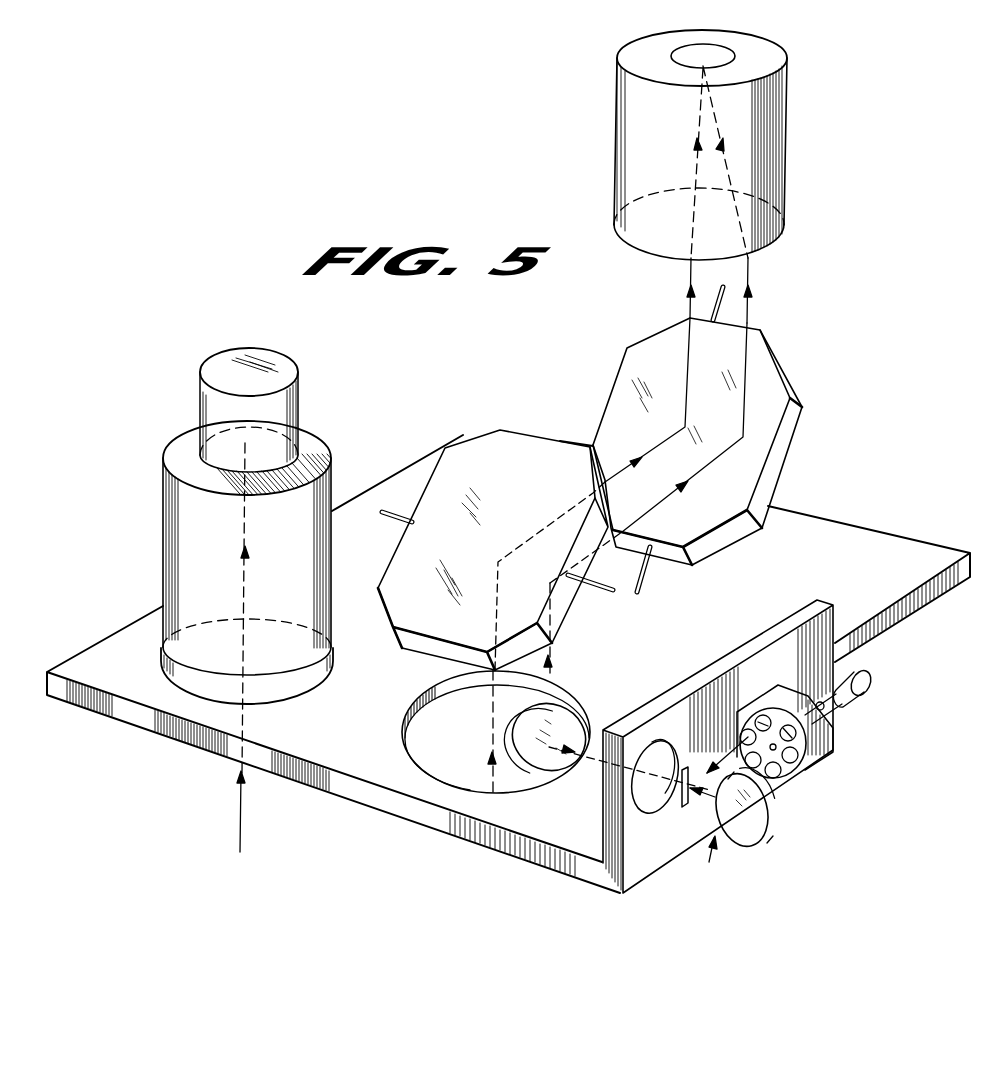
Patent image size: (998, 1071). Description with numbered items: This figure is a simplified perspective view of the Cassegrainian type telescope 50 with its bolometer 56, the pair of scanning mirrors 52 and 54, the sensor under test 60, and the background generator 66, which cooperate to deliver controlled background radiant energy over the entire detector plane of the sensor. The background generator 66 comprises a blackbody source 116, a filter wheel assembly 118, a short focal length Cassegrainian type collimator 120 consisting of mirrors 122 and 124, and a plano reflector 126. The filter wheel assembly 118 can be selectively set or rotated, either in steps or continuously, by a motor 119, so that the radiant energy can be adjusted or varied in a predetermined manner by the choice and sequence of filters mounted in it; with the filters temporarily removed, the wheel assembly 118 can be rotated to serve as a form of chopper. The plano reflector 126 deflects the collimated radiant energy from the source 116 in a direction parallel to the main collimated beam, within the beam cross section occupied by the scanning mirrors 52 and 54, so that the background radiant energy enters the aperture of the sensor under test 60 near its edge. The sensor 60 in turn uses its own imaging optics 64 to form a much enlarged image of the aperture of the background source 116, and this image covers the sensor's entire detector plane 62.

The Cassegrainian type telescope 50 is at (163, 517).
The scanning mirror 52 is at (492, 430).
The scanning mirror 54 is at (612, 401).
The bolometer 56 is at (199, 393).
The sensor under test 60 is at (720, 150).
The detector plane 62 is at (735, 54).
The imaging optics 64 is at (762, 243).
The background generator 66 is at (833, 759).
The blackbody source 116 is at (790, 684).
The filter wheel assembly 118 is at (804, 762).
The motor 119 is at (867, 692).
The short focal length Cassegrainian type collimator 120 is at (705, 861).
The mirror 122 is at (768, 822).
The mirror 124 is at (683, 806).
The plano reflector 126 is at (524, 775).